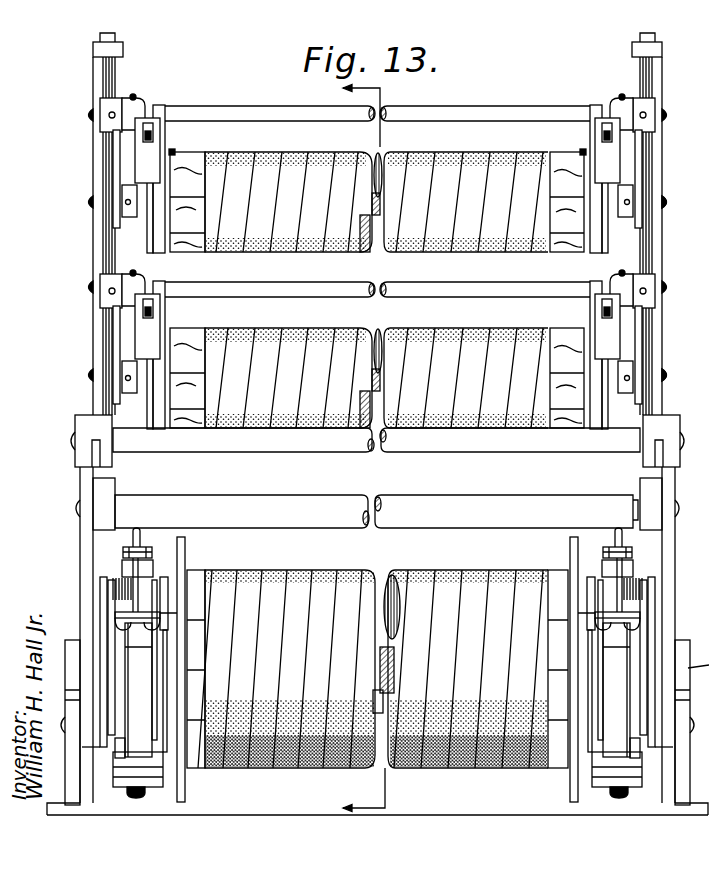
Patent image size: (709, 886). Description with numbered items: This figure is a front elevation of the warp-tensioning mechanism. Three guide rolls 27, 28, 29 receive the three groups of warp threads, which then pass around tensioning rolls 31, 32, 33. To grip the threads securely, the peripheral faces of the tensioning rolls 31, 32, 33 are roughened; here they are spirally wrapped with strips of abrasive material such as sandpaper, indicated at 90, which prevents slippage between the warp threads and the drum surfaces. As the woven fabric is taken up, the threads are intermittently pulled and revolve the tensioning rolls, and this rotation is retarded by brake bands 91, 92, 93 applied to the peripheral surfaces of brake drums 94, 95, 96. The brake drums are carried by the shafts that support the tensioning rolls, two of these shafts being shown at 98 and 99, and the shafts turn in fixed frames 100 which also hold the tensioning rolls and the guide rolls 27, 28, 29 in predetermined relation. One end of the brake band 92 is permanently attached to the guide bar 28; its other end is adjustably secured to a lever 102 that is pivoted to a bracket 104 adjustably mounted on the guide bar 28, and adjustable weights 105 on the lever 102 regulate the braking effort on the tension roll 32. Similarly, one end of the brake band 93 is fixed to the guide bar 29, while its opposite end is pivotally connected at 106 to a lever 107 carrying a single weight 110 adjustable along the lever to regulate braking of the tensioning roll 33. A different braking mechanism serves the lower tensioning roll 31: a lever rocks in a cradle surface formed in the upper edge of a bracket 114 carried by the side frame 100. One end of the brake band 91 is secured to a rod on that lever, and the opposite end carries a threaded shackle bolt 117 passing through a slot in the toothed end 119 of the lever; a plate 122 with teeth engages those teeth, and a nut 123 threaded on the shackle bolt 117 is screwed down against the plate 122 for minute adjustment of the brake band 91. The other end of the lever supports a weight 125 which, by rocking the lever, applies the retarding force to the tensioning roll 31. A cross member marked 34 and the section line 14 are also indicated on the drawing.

The section line 14- 14 is at (379, 449).
The guide roll 27 is at (480, 495).
The guide roll 28 is at (293, 283).
The guide roll 29 is at (136, 96).
The tensioning roll 31 is at (553, 578).
The tensioning roll 32 is at (561, 340).
The tensioning roll 33 is at (553, 248).
The cross bar 34 is at (337, 453).
The abrasive material 90 is at (214, 182).
The brake band 91 is at (147, 695).
The brake band 92 is at (158, 425).
The brake band 93 is at (163, 107).
The brake drum 94 is at (114, 755).
The brake drum 95 is at (149, 428).
The brake drum 96 is at (148, 233).
The shaft 98 is at (668, 375).
The shaft 99 is at (667, 203).
The fixed frame 100 is at (93, 77).
The lever 102 is at (145, 313).
The bracket 104 is at (130, 280).
The adjustable weights 105 is at (147, 336).
The pivotal connection 106 is at (173, 149).
The lever 107 is at (145, 137).
The weight 110 is at (147, 157).
The bracket 114 is at (120, 600).
The threaded shackle bolt 117 is at (115, 590).
The lever end 119 is at (122, 569).
The plate 122 is at (122, 556).
The nut 123 is at (132, 540).
The weight 125 is at (127, 778).